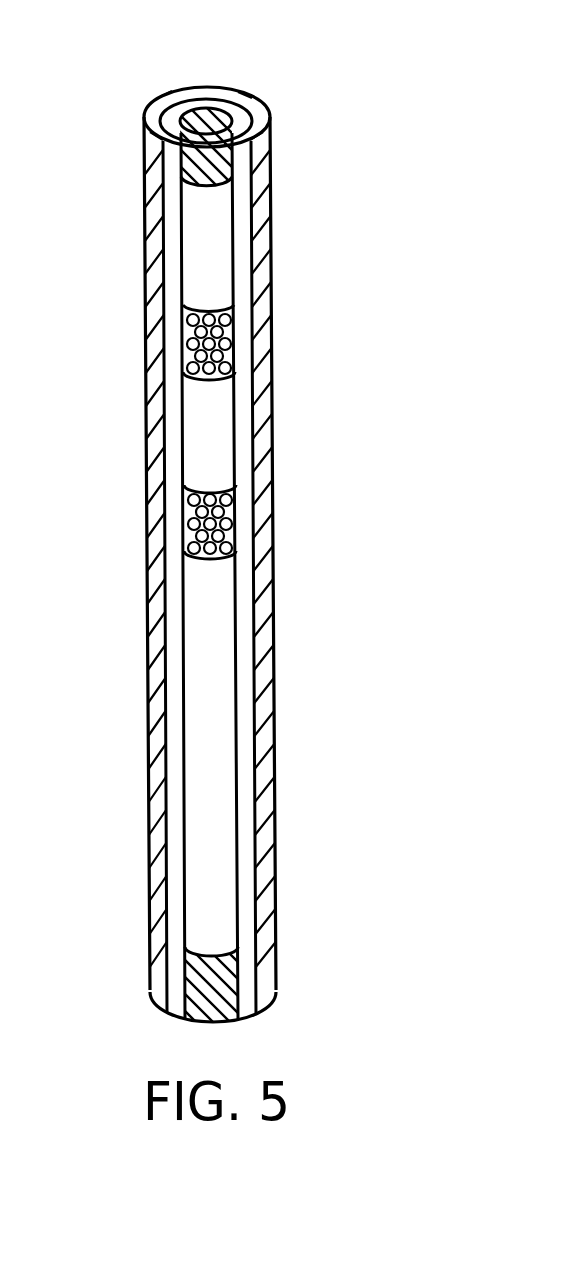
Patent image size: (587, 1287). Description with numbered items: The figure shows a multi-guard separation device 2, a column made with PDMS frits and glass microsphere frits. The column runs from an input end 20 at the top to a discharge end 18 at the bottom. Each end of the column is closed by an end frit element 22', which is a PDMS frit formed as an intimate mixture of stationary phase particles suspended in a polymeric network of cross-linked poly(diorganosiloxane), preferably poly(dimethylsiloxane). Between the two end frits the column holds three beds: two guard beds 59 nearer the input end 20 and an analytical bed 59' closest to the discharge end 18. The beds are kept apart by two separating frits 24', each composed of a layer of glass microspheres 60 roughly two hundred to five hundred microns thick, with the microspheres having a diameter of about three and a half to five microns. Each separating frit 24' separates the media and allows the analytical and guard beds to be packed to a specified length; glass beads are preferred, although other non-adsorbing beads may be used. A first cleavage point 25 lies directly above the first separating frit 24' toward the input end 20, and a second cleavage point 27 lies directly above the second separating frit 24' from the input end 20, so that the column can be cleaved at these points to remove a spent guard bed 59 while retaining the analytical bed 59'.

The separation device 2 is at (447, 380).
The discharge end 18 is at (146, 1012).
The input end 20 is at (141, 103).
The end frit element 22' is at (211, 565).
The separating frit 24' is at (156, 434).
The first cleavage point 25 is at (275, 310).
The second cleavage point 27 is at (277, 491).
The bed 59 is at (258, 393).
The analytical bed 59' is at (263, 750).
The glass microspheres 60 is at (228, 522).